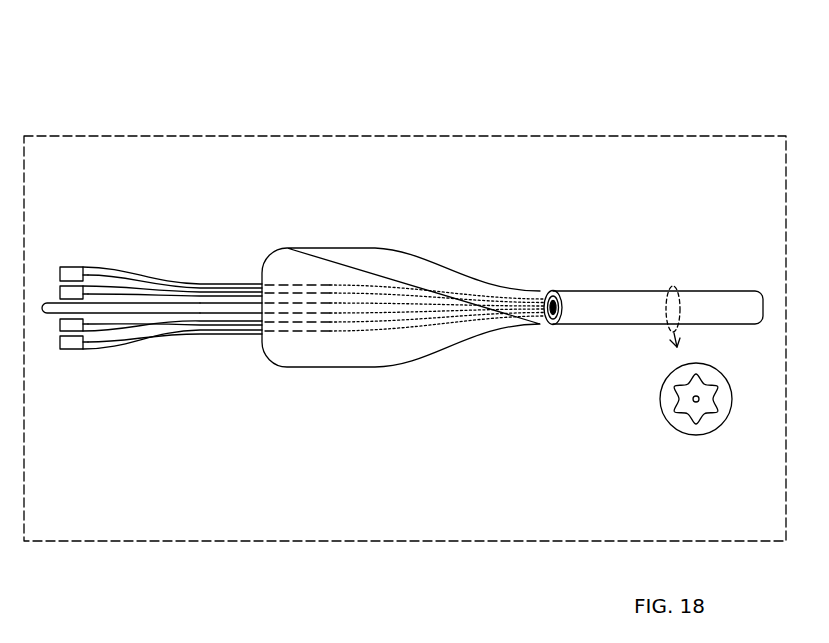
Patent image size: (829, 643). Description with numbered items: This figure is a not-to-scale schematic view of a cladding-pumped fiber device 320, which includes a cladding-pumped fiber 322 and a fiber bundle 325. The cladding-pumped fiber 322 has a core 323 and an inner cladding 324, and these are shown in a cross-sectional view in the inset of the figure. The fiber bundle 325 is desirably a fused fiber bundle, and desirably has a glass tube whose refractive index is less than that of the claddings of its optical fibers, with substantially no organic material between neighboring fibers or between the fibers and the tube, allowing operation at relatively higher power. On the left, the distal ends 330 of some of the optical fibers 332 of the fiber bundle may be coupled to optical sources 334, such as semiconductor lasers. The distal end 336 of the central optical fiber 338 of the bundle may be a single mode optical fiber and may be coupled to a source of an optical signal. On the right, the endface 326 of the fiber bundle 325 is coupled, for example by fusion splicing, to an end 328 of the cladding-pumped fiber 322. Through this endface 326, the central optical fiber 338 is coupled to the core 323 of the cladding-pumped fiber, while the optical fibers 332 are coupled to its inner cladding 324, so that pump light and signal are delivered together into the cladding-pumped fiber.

The cladding-pumped fiber device 320 is at (237, 95).
The cladding-pumped fiber 322 is at (630, 302).
The core 323 is at (697, 403).
The inner cladding 324 is at (677, 398).
The fiber bundle 325 is at (315, 400).
The endface 326 is at (550, 290).
The end 328 is at (566, 329).
The distal ends 330 is at (100, 294).
The optical fibers 332 is at (140, 294).
The optical sources 334 is at (63, 349).
The distal end 336 is at (46, 307).
The central optical fiber 338 is at (207, 308).